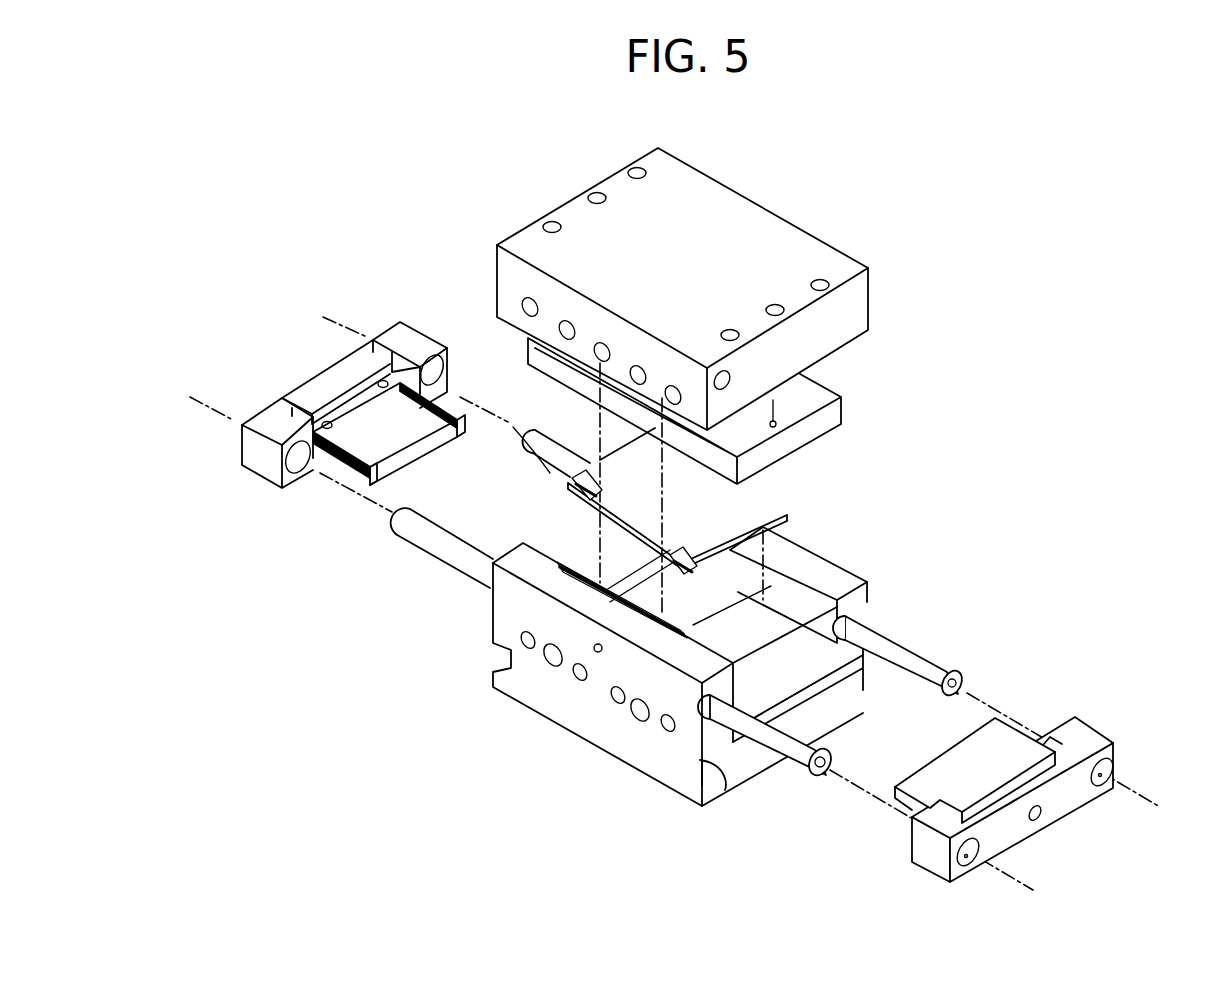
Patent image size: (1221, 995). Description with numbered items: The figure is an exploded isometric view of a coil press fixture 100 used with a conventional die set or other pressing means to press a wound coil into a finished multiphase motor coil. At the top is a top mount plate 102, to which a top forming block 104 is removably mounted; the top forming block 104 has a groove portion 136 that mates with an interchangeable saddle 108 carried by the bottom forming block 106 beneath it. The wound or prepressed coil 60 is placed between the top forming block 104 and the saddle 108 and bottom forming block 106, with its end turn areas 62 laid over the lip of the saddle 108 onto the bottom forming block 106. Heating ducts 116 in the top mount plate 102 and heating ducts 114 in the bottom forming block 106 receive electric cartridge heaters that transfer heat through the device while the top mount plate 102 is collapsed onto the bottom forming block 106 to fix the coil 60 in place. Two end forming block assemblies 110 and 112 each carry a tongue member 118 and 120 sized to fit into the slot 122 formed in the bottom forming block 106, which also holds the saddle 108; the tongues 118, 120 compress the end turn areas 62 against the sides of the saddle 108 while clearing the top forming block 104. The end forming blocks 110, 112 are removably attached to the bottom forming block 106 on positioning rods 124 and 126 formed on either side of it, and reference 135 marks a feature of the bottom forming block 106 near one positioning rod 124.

The coil press fixture 100 is at (1112, 232).
The top mount plate 102 is at (818, 252).
The top forming block 104 is at (840, 393).
The bottom forming block 106 is at (862, 598).
The interchangeable saddle 108 is at (733, 632).
The end forming block assembly 110 is at (1083, 742).
The end forming block assembly 112 is at (298, 398).
The heating ducts 114 is at (528, 650).
The heating ducts 116 is at (531, 303).
The tongue member 118 is at (998, 737).
The tongue member 120 is at (397, 423).
The slot 122 is at (824, 625).
The positioning rod 124 is at (832, 762).
The positioning rod 126 is at (550, 473).
The base edge 135 is at (848, 727).
The groove portion 136 is at (620, 425).
The coil 60 is at (790, 508).
The end turn areas 62 is at (585, 500).